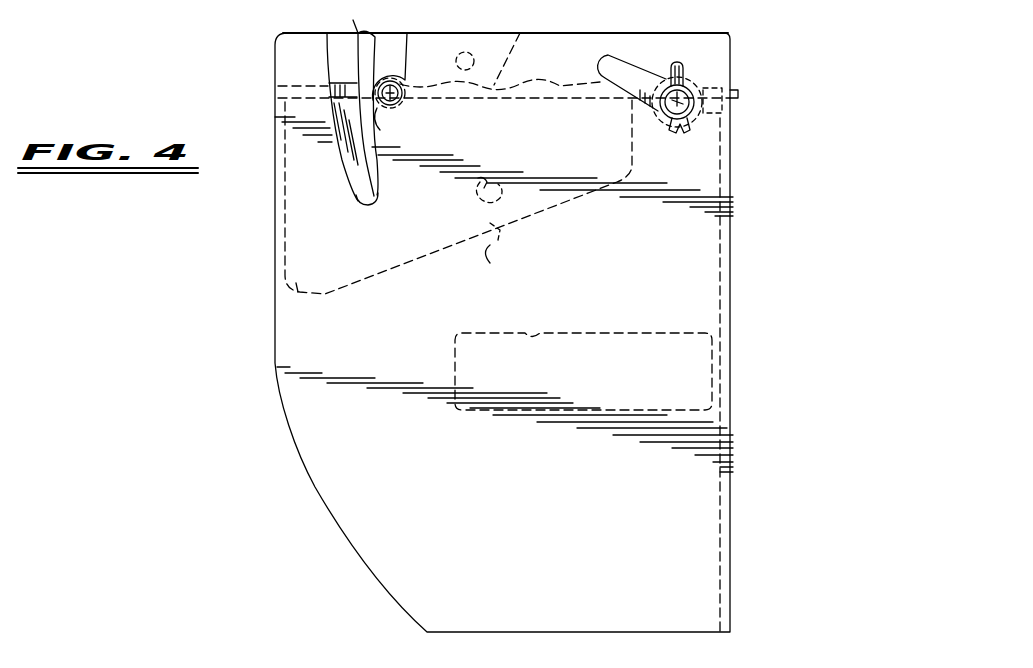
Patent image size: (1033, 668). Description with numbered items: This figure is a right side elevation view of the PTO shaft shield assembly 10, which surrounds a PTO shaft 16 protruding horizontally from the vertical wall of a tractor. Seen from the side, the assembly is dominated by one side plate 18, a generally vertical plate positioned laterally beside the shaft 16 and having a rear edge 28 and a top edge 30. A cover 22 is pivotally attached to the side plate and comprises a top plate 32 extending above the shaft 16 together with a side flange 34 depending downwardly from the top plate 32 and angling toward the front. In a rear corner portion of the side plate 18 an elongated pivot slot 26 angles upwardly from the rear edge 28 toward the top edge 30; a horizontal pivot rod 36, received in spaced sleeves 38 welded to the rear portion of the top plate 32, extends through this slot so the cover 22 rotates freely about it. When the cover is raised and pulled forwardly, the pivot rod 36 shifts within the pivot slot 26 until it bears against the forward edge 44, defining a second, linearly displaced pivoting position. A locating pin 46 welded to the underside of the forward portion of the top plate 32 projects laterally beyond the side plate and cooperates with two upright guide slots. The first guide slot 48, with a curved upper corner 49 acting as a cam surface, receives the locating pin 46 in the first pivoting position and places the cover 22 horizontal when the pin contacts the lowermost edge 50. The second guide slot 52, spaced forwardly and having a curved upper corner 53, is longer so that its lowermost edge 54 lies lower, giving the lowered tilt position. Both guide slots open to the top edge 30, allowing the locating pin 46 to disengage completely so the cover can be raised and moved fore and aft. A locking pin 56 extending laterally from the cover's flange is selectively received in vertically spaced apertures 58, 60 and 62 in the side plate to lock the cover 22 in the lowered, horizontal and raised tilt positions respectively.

The PTO shaft shield assembly 10 is at (789, 74).
The PTO shaft 16 is at (640, 340).
The side plate 18 is at (313, 487).
The cover 22 is at (513, 87).
The pivot slot 26 is at (672, 60).
The rear edge 28 is at (730, 131).
The top edge 30 is at (584, 33).
The top plate 32 is at (522, 34).
The side flange 34 is at (296, 289).
The pivot rod 36 is at (681, 99).
The sleeve 38 is at (717, 113).
The forward edge of pivot slot 44 is at (618, 55).
The locating pin 46 is at (399, 99).
The first guide slot 48 is at (405, 34).
The upper corner of first guide slot 49 is at (384, 34).
The lowermost edge of first guide slot 50 is at (392, 124).
The second guide slot 52 is at (382, 174).
The upper corner of second guide slot 53 is at (327, 33).
The lowermost edge of second guide slot 54 is at (354, 198).
The locking pin 56 is at (502, 194).
The aperture 58 is at (489, 257).
The aperture 60 is at (484, 175).
The aperture 62 is at (473, 45).